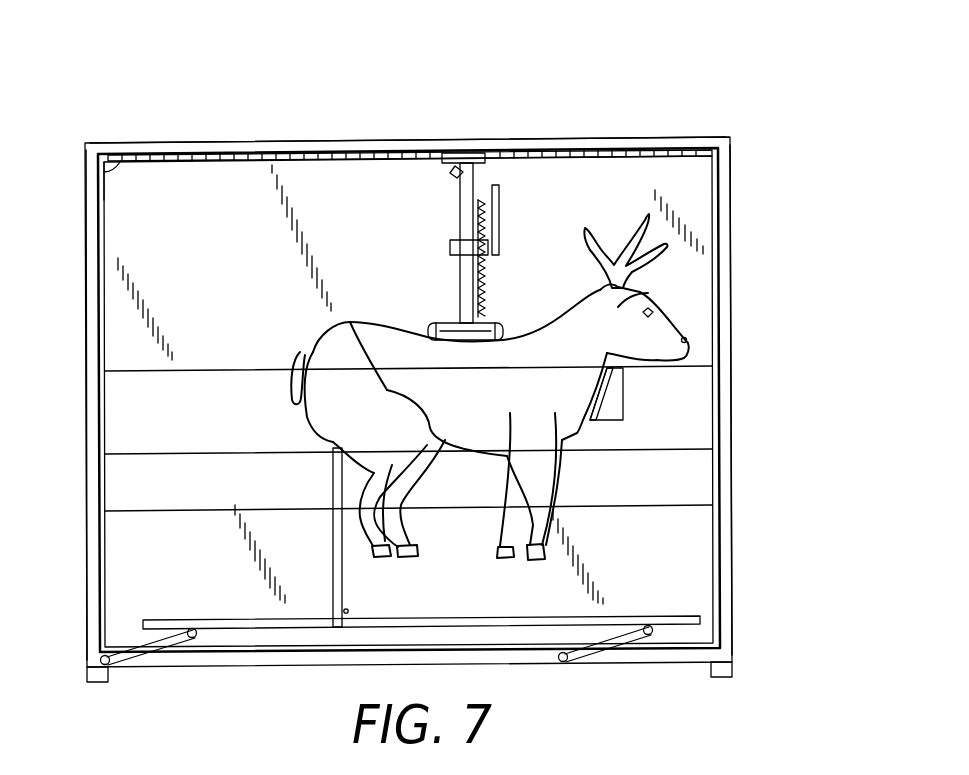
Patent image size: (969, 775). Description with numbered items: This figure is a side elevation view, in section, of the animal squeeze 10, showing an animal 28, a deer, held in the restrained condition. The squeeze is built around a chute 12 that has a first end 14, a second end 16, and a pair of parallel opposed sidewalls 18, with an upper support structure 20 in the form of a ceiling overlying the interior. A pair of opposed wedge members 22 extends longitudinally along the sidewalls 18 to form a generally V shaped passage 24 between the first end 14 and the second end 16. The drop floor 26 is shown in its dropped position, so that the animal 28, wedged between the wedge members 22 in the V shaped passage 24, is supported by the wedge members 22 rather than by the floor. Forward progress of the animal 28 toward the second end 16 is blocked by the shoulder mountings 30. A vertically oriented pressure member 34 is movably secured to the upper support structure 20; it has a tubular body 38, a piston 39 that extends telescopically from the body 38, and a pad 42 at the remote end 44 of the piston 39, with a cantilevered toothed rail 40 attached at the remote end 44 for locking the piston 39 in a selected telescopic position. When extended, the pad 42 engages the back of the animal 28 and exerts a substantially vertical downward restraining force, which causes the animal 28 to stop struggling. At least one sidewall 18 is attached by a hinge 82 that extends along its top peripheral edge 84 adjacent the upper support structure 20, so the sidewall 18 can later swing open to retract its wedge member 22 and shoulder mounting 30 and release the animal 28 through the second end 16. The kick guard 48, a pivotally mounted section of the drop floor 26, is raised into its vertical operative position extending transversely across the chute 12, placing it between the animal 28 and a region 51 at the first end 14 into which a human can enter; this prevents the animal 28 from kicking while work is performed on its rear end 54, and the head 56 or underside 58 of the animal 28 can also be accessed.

The animal squeeze 10 is at (766, 192).
The chute 12 is at (232, 143).
The first end 14 is at (85, 372).
The second end 16 is at (732, 292).
The sidewalls 18 is at (146, 237).
The upper support structure 20 is at (340, 143).
The wedge members 22 is at (697, 432).
The V shaped passage 24 is at (598, 438).
The drop floor 26 is at (628, 612).
The animal 28 is at (469, 387).
The shoulder mountings 30 is at (608, 410).
The pressure member 34 is at (500, 235).
The tubular body 38 is at (452, 232).
The piston 39 is at (452, 262).
The toothed rail 40 is at (492, 282).
The pad 42 is at (455, 341).
The remote end 44 is at (462, 318).
The kick guard 48 is at (332, 500).
The region 51 is at (192, 548).
The rear end 54 is at (318, 345).
The head 56 is at (628, 302).
The underside 58 is at (487, 432).
The hinge 82 is at (180, 158).
The top peripheral edge 84 is at (112, 172).